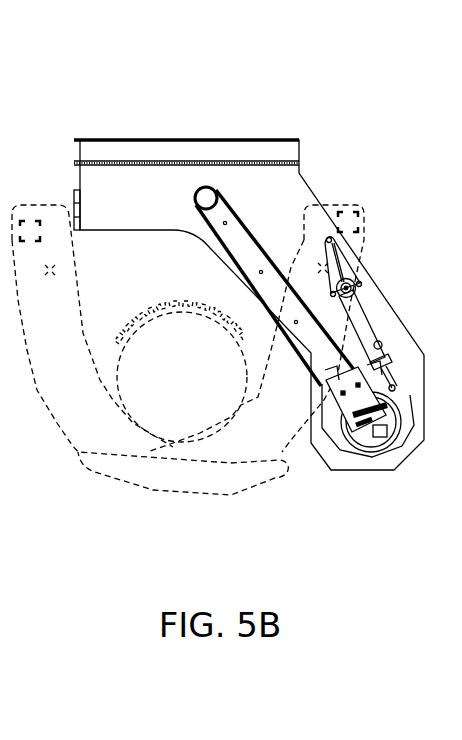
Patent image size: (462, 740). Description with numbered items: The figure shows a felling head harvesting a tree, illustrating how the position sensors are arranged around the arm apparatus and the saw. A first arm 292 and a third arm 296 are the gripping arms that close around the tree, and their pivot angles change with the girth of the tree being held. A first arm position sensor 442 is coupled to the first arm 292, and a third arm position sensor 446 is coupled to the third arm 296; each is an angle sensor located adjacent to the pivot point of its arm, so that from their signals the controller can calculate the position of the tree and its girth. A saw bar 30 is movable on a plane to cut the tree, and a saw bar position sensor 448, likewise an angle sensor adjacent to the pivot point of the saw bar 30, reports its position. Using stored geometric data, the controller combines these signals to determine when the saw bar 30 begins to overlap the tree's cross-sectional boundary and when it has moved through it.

The saw bar 30 is at (258, 212).
The first arm 292 is at (57, 423).
The third arm 296 is at (301, 457).
The first arm position sensor 442 is at (37, 215).
The third arm position sensor 446 is at (352, 205).
The saw bar position sensor 448 is at (351, 452).